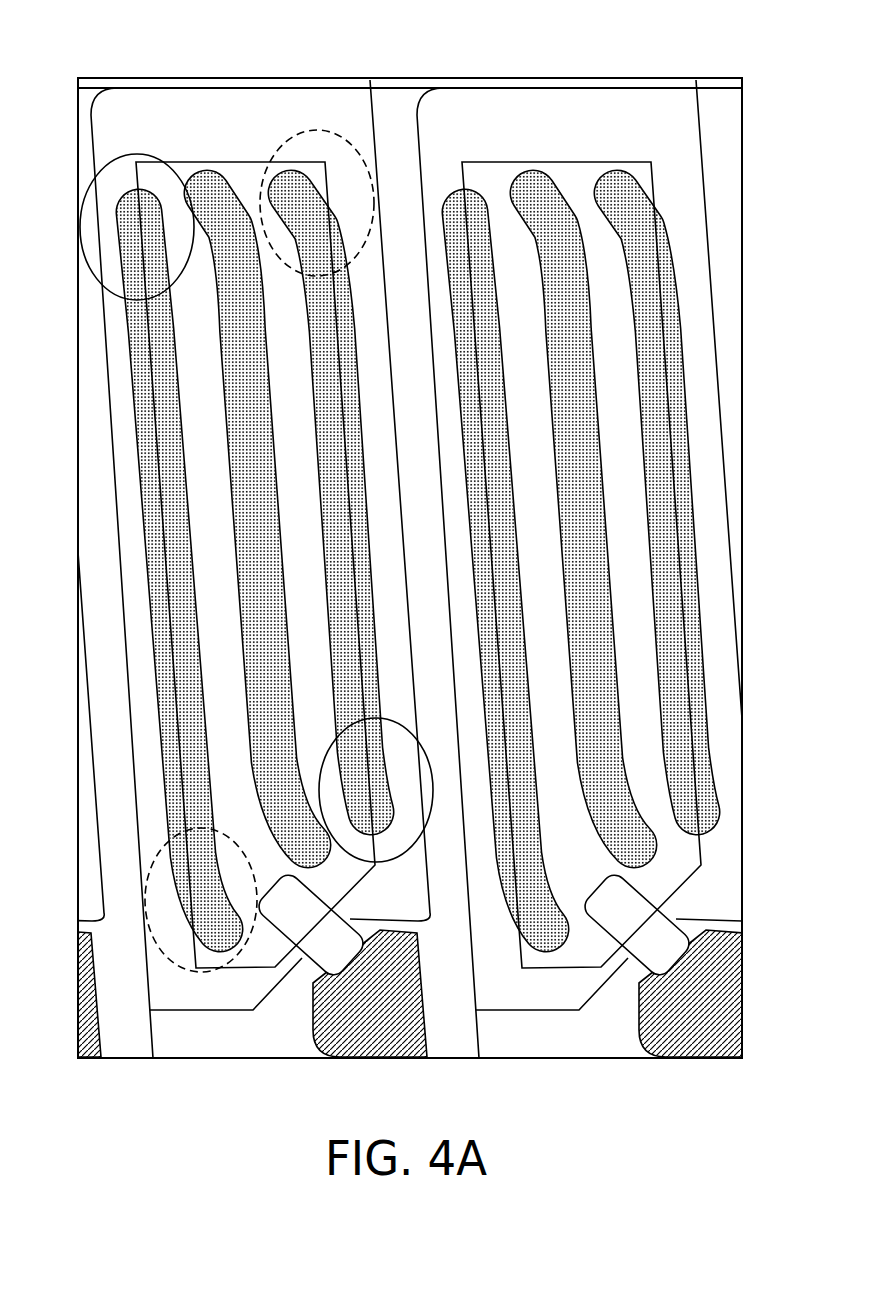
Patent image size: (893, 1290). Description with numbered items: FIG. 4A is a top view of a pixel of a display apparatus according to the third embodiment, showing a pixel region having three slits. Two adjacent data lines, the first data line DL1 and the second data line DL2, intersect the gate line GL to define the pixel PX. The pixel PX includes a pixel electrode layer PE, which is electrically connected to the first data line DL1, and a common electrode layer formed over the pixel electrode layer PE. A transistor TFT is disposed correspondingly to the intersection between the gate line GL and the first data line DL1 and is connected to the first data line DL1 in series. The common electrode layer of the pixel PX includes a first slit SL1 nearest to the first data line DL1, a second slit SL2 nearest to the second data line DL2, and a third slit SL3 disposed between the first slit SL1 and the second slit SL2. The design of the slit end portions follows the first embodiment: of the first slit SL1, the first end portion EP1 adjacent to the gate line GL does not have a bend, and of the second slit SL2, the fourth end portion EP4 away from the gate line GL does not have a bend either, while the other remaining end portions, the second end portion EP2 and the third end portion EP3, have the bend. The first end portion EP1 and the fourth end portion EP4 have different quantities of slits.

The pixel PX is at (259, 68).
The first data line DL1 is at (397, 105).
The second data line DL2 is at (88, 103).
The first slit SL1 is at (282, 151).
The second slit SL2 is at (120, 183).
The third slit SL3 is at (198, 151).
The first end portion EP1 is at (426, 846).
The second end portion EP2 is at (315, 131).
The third end portion EP3 is at (192, 972).
The fourth end portion EP4 is at (137, 154).
The pixel electrode layer PE is at (242, 978).
The gate line GL is at (277, 1037).
The transistor TFT is at (376, 1036).